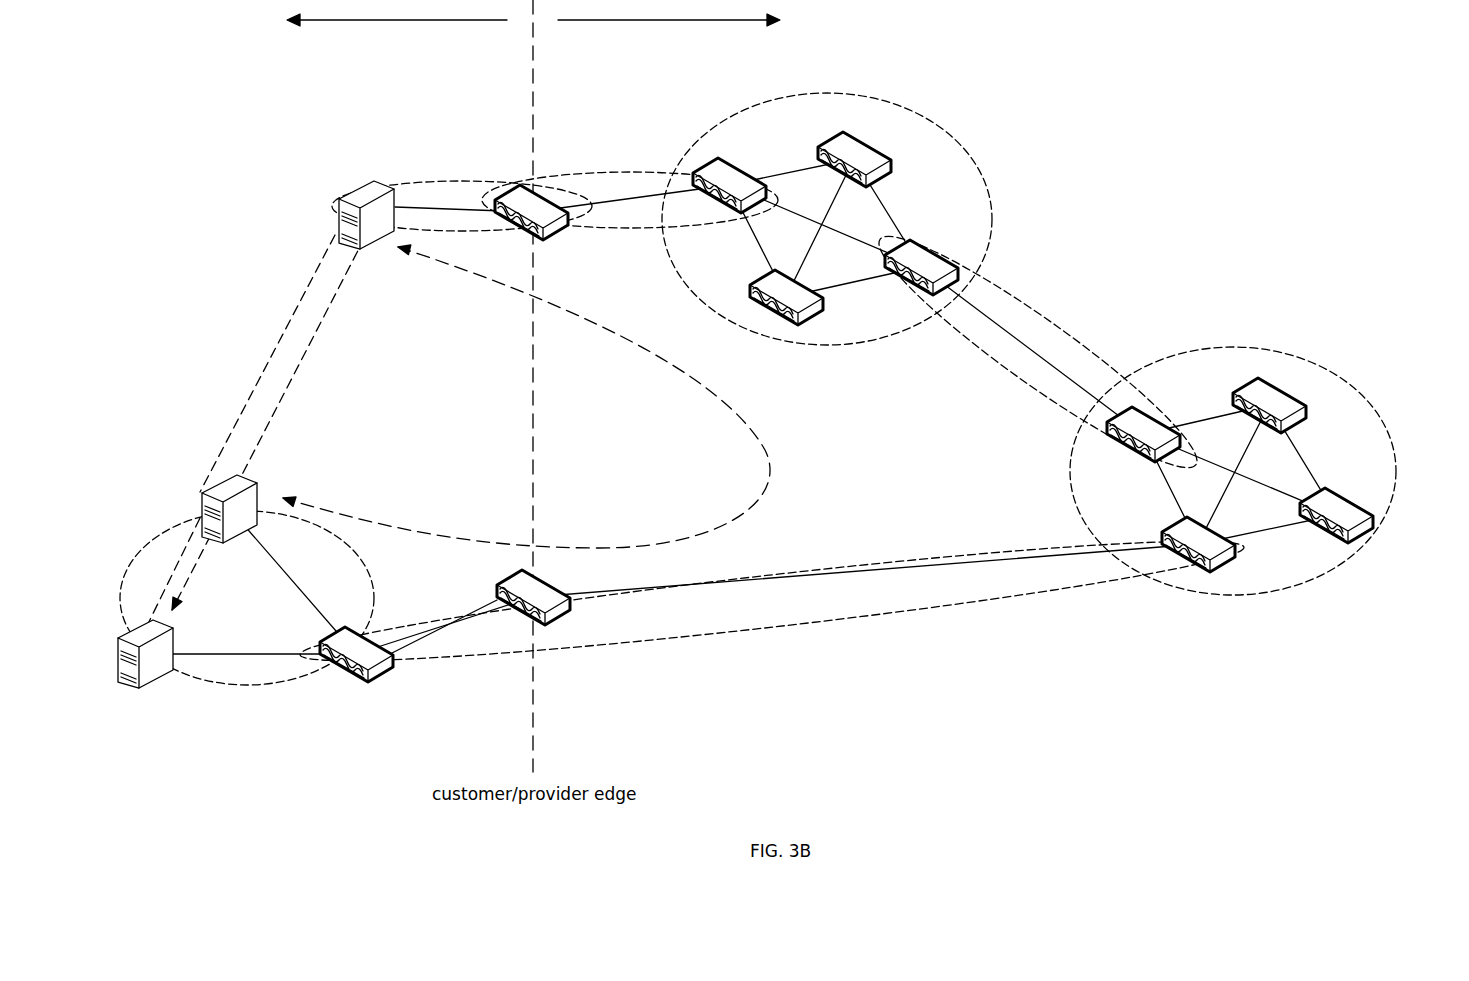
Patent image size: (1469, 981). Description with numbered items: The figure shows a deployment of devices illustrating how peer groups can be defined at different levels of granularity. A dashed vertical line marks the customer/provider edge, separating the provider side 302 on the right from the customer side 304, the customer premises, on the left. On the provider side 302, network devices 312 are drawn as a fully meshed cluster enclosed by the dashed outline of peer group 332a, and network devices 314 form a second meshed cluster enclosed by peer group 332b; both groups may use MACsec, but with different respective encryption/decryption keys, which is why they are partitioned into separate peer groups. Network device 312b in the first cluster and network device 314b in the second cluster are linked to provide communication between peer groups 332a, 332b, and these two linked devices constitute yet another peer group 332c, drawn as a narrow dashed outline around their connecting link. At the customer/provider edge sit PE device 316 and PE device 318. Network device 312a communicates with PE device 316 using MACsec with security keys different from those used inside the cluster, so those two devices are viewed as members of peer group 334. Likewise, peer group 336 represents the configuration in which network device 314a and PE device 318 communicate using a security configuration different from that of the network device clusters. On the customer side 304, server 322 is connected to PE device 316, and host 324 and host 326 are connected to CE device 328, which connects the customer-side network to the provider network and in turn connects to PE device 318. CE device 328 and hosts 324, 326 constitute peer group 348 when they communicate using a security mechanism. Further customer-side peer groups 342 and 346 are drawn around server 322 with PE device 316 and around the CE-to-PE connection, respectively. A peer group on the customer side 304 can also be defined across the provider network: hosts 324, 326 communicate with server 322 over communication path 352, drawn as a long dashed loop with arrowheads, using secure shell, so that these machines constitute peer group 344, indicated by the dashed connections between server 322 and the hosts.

The provider side 302 is at (669, 13).
The customer side 304 is at (397, 23).
The network devices 312 is at (970, 226).
The network device 312a is at (746, 172).
The network device 312b is at (897, 283).
The network devices 314 is at (1282, 424).
The network device 314a is at (1172, 520).
The network device 314b is at (1143, 408).
The provider edge (PE) device 316 is at (518, 186).
The PE device 318 is at (560, 622).
The server 322 is at (338, 203).
The host 324 is at (220, 484).
The host 326 is at (140, 690).
The customer edge (CE) device 328 is at (361, 688).
The peer group 332a is at (822, 97).
The peer group 332b is at (1233, 598).
The peer group 332c is at (1057, 328).
The peer group 334 is at (662, 238).
The peer group 336 is at (1014, 590).
The peer group 342 is at (404, 184).
The peer group 344 is at (305, 367).
The peer group 346 is at (452, 650).
The peer group 348 is at (246, 686).
The communication path 352 is at (766, 483).